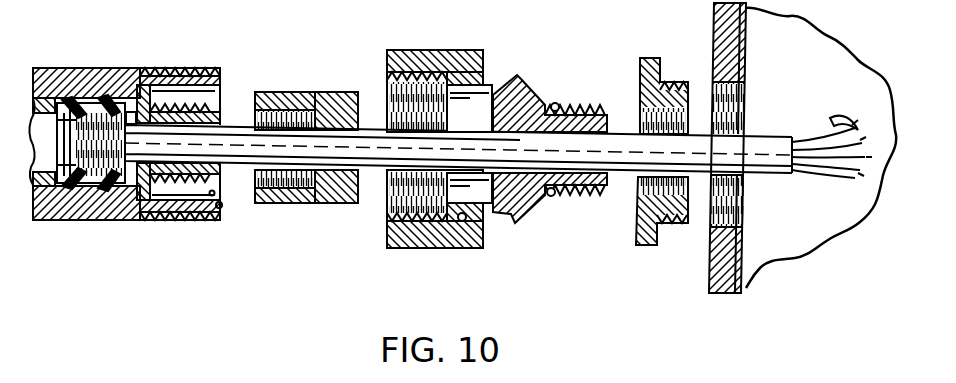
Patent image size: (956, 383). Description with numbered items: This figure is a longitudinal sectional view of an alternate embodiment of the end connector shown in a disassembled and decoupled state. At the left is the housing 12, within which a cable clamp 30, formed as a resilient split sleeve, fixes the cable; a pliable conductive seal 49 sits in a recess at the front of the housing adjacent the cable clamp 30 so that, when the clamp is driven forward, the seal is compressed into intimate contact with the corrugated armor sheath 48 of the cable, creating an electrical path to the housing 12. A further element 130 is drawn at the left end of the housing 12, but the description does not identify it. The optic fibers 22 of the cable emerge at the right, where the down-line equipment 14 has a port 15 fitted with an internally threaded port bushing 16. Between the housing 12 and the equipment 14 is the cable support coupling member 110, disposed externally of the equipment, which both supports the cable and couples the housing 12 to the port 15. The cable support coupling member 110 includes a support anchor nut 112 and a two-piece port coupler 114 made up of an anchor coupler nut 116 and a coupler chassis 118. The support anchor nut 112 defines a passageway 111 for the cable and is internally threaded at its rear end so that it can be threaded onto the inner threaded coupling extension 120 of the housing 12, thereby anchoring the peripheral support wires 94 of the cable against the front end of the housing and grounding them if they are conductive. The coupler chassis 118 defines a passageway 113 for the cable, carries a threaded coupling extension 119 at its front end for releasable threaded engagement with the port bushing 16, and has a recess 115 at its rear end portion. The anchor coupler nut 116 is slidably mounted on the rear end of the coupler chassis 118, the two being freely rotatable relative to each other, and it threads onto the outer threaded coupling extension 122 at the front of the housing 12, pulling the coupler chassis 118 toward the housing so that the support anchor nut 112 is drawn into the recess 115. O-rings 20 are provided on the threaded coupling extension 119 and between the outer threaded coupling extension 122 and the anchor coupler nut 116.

The housing 12 is at (100, 205).
The down-line equipment 14 is at (755, 148).
The port 15 is at (767, 115).
The port bushing 16 is at (650, 58).
The O-ring 20 is at (548, 196).
The optic fibers 22 is at (832, 132).
The cable clamp 30 is at (43, 222).
The corrugated armor sheath 48 is at (124, 98).
The conductive seal 49 is at (100, 98).
The peripheral support wires 94 is at (147, 116).
The cable support coupling member 110 is at (618, 270).
The passageway 111 is at (340, 118).
The support anchor nut 112 is at (305, 92).
The passageway 113 is at (582, 193).
The port coupler 114 is at (508, 67).
The recess 115 is at (455, 115).
The anchor coupler nut 116 is at (430, 50).
The coupler chassis 118 is at (522, 98).
The threaded coupling extension 119 is at (587, 112).
The inner threaded coupling extension 120 is at (214, 194).
The outer threaded coupling extension 122 is at (174, 215).
The strain relief grip 130 is at (73, 98).